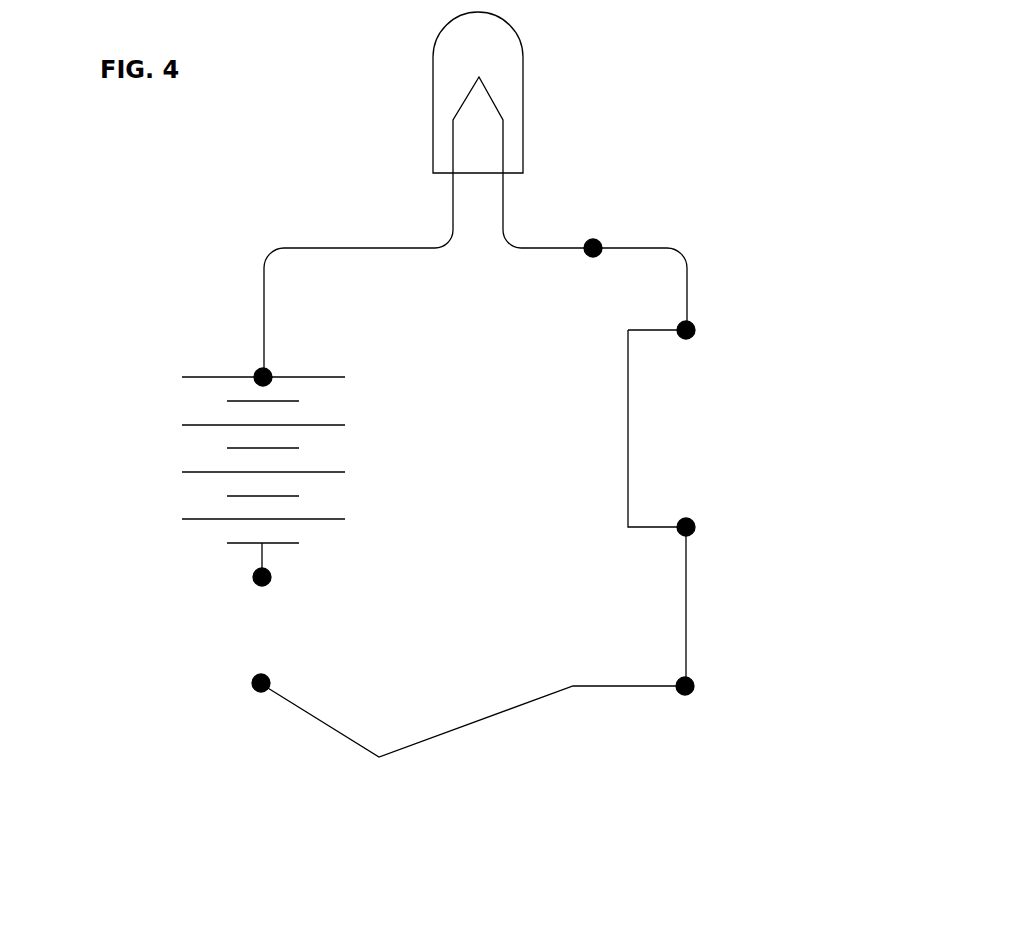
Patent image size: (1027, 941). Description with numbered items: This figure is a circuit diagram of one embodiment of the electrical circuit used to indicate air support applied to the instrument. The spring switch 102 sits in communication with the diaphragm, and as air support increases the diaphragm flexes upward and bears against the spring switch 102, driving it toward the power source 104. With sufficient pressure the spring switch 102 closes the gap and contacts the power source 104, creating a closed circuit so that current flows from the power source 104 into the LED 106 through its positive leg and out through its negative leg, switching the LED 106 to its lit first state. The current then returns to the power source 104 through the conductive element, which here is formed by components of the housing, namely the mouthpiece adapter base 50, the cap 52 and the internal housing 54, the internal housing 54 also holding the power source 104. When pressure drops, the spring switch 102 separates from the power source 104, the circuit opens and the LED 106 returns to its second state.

The LED 106 is at (376, 236).
The power source 104 is at (159, 438).
The cap 52 is at (697, 248).
The internal housing 54 is at (641, 439).
The mouthpiece adapter base 50 is at (698, 604).
The spring switch 102 is at (612, 698).